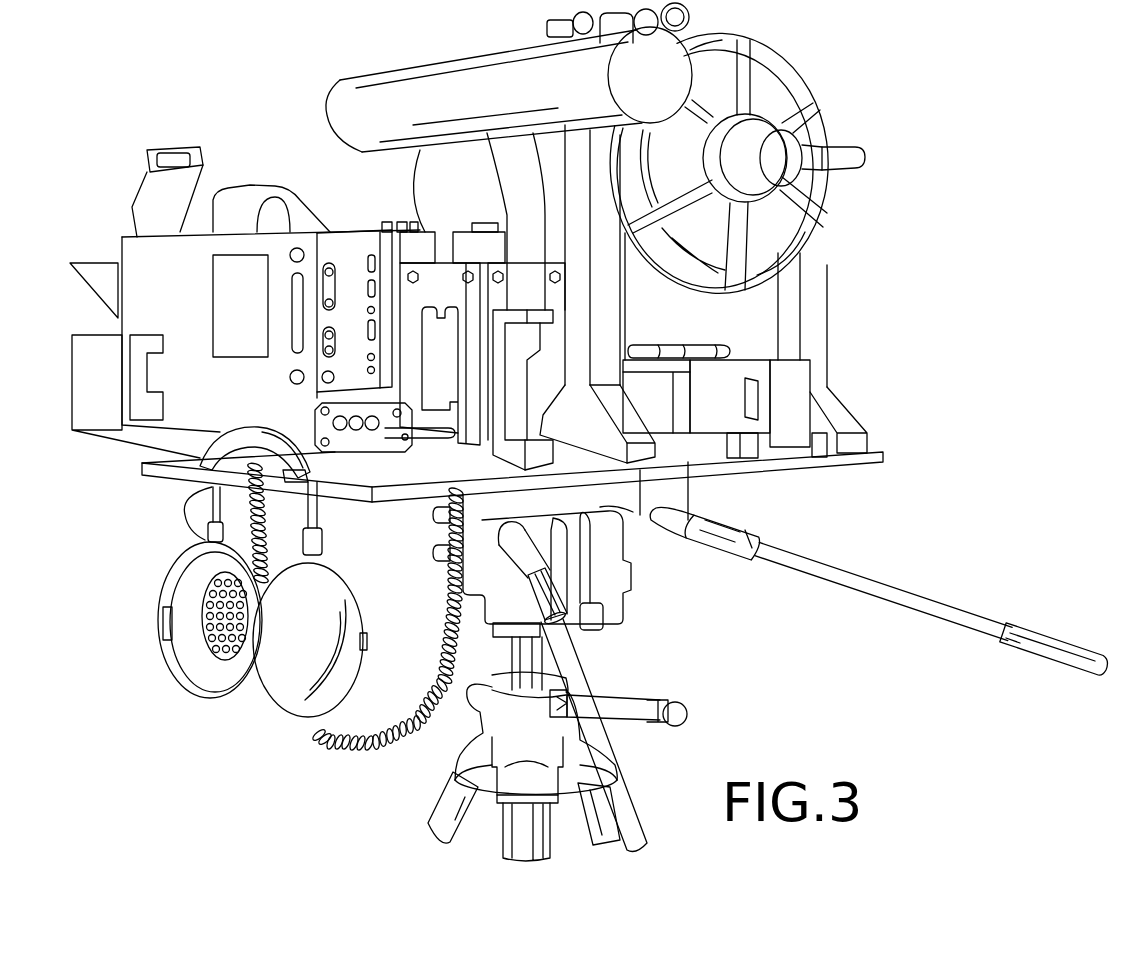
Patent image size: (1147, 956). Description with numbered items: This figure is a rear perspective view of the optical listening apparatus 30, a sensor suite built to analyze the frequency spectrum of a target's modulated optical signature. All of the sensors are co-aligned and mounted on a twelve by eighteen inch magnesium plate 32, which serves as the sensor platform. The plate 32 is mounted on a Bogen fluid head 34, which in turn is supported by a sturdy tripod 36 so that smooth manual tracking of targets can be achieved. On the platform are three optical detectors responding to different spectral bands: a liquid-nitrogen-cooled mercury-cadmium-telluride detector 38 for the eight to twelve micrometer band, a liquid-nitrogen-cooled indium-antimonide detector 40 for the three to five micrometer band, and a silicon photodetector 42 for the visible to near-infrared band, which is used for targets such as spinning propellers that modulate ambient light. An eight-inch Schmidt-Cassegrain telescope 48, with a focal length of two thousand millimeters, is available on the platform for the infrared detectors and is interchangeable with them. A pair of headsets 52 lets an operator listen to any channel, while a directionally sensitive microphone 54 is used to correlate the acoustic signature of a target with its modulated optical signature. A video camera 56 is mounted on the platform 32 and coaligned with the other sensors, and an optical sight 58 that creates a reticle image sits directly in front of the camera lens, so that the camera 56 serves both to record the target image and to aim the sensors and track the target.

The overall apparatus 30 is at (830, 287).
The magnesium plate 32 is at (840, 467).
The fluid head 34 is at (631, 578).
The tripod 36 is at (455, 755).
The HgCdTe detector 38 is at (380, 220).
The InSb detector 40 is at (472, 223).
The silicon photodetector 42 is at (798, 398).
The eight-inch telescope 48 is at (830, 133).
The headsets 52 is at (165, 580).
The directionally sensitive microphone 54 is at (477, 55).
The video camera 56 is at (233, 318).
The optical sight 58 is at (75, 263).